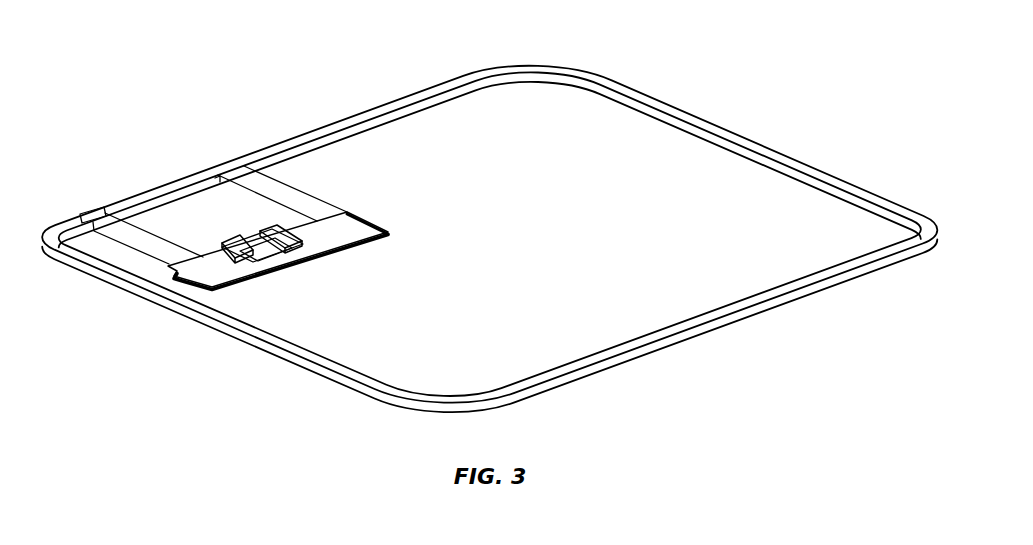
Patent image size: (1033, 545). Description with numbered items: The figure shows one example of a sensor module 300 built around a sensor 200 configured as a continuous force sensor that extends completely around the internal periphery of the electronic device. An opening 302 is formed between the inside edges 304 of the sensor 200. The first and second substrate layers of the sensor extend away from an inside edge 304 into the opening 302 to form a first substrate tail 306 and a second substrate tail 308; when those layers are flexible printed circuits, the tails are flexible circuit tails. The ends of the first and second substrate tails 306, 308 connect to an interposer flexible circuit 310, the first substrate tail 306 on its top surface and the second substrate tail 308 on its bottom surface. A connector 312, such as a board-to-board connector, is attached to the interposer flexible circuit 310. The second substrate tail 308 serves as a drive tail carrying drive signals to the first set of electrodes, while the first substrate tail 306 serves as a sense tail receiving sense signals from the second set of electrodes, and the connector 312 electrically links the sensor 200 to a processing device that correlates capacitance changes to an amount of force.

The sensor 200 is at (648, 92).
The sensor module 300 is at (329, 109).
The opening 302 is at (539, 219).
The inside edges 304 is at (413, 121).
The first substrate tail 306 is at (153, 233).
The second substrate tail 308 is at (295, 192).
The interposer flexible circuit 310 is at (382, 222).
The connector 312 is at (311, 258).